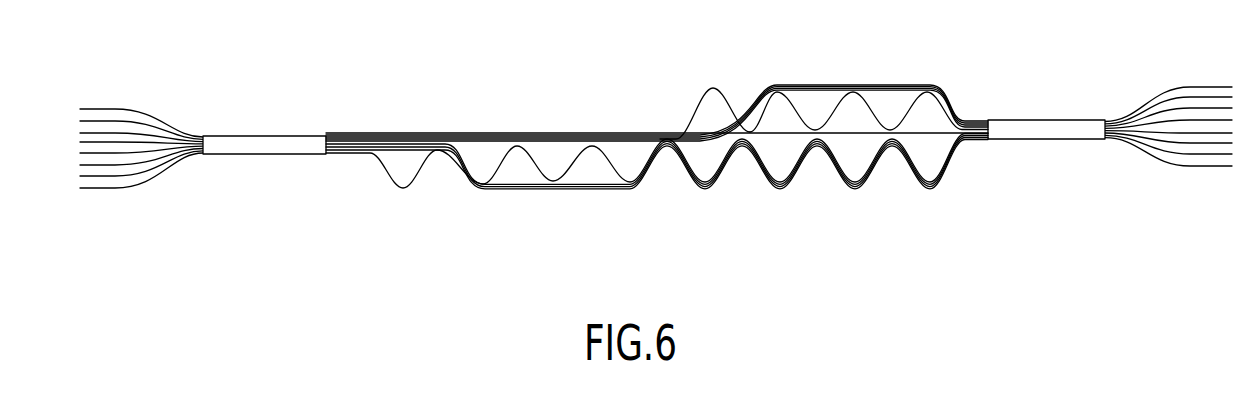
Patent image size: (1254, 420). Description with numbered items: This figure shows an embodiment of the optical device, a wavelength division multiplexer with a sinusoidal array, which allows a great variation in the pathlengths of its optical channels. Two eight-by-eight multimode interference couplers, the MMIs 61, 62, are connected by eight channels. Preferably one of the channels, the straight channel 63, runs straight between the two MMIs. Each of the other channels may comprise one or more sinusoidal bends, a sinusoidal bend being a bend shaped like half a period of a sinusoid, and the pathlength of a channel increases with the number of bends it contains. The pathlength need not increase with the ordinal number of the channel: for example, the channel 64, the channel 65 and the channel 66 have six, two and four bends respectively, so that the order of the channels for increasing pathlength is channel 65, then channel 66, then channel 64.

The 8×8 MMI 61 is at (263, 155).
The 8×8 MMI 62 is at (1055, 139).
The straight channel 63 is at (947, 132).
The channel with six bends 64 is at (875, 89).
The channel with two bends 65 is at (816, 87).
The channel with four bends 66 is at (713, 88).